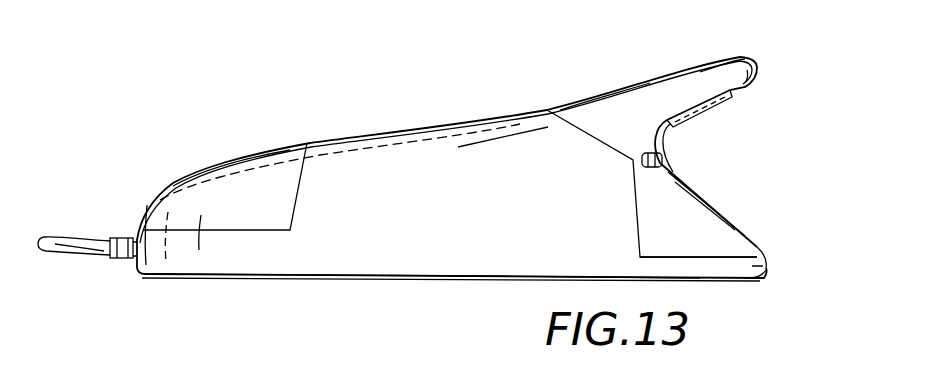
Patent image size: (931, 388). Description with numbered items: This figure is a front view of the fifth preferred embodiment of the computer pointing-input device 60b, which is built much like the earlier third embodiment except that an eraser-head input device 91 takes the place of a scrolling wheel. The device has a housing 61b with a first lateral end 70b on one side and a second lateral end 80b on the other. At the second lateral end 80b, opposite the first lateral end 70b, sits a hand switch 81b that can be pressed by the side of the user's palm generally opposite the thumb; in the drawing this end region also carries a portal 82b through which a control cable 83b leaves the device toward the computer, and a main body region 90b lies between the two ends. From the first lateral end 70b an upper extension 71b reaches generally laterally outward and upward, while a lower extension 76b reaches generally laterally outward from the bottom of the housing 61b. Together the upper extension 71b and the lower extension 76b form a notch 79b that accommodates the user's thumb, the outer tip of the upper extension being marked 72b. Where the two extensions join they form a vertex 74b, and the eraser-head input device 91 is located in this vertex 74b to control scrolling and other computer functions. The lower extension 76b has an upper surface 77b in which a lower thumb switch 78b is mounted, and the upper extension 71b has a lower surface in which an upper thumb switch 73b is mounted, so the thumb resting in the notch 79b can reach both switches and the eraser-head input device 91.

The computer pointing-input device 60b is at (322, 118).
The housing 61b is at (496, 268).
The first lateral end 70b is at (712, 293).
The upper extension 71b is at (605, 90).
The tip of tongue 72b is at (749, 70).
The upper thumb switch 73b is at (688, 110).
The vertex 74b is at (677, 182).
The lower extension 76b is at (737, 282).
The upper surface 77b is at (767, 267).
The lower thumb switch 78b is at (727, 213).
The notch 79b is at (750, 103).
The second lateral end 80b is at (222, 276).
The hand switch 81b is at (173, 188).
The nozzle 82b is at (122, 236).
The hose 83b is at (99, 257).
The main housing 90b is at (447, 215).
The eraser-head input device 91 is at (680, 148).